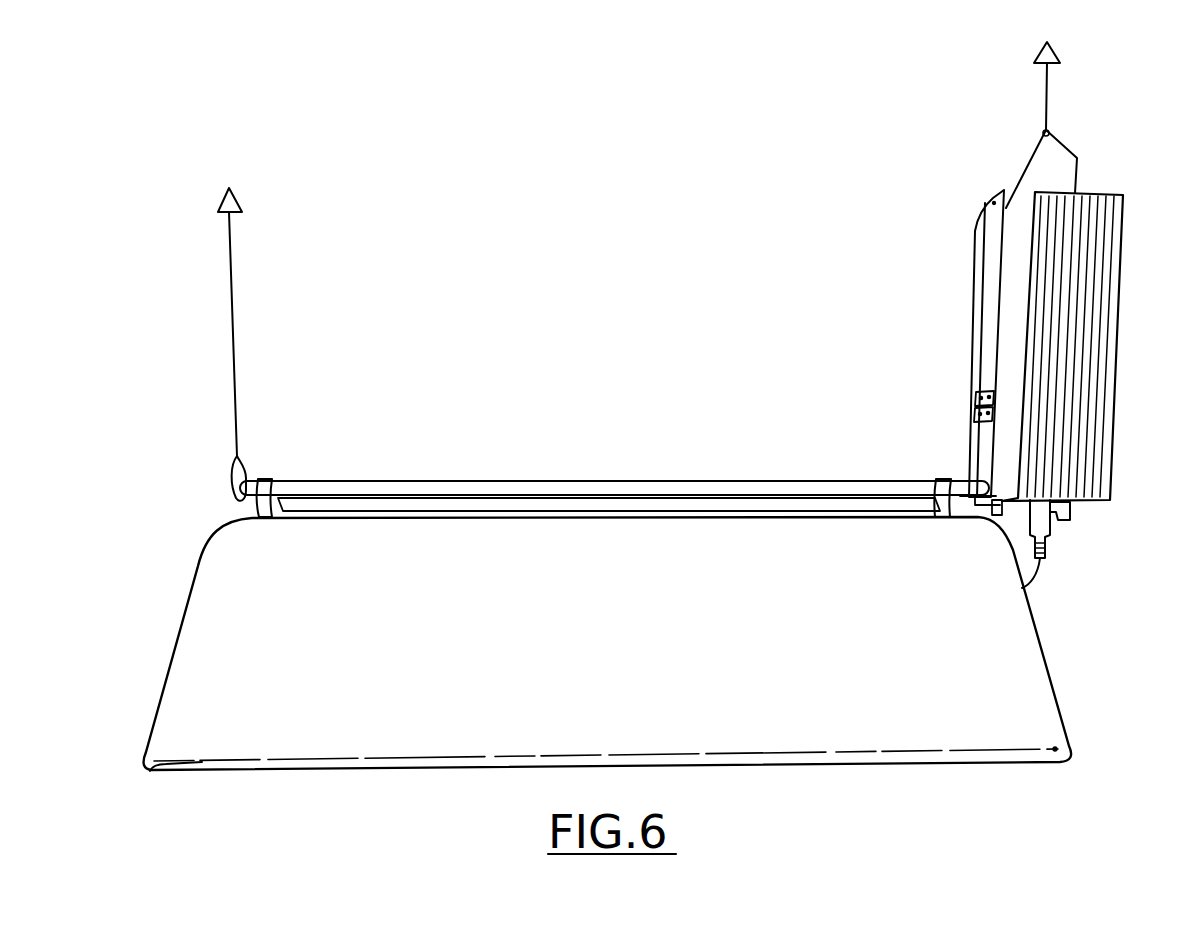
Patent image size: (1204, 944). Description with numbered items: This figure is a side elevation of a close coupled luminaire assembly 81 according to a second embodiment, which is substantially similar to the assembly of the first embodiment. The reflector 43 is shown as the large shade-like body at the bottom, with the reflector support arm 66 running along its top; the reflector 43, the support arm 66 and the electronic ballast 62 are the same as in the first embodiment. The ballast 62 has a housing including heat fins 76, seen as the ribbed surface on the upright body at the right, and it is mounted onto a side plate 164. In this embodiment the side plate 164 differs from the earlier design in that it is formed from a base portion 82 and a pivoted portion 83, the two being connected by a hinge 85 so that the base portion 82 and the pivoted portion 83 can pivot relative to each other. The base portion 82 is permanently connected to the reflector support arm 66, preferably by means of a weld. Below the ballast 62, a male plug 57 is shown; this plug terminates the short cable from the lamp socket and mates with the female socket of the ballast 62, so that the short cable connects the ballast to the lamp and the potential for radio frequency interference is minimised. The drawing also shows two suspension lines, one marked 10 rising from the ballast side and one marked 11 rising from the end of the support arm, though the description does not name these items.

The suspension cable 10 is at (1045, 105).
The suspension cable 11 is at (237, 283).
The reflector 43 is at (608, 644).
The male plug 57 is at (1043, 524).
The electronic ballast 62 is at (1101, 346).
The reflector support arm 66 is at (493, 492).
The heat fins 76 is at (1075, 398).
The luminaire assembly 81 is at (622, 318).
The base portion 82 is at (985, 443).
The pivoted portion 83 is at (977, 330).
The hinge 85 is at (975, 401).
The side plate 164 is at (958, 283).